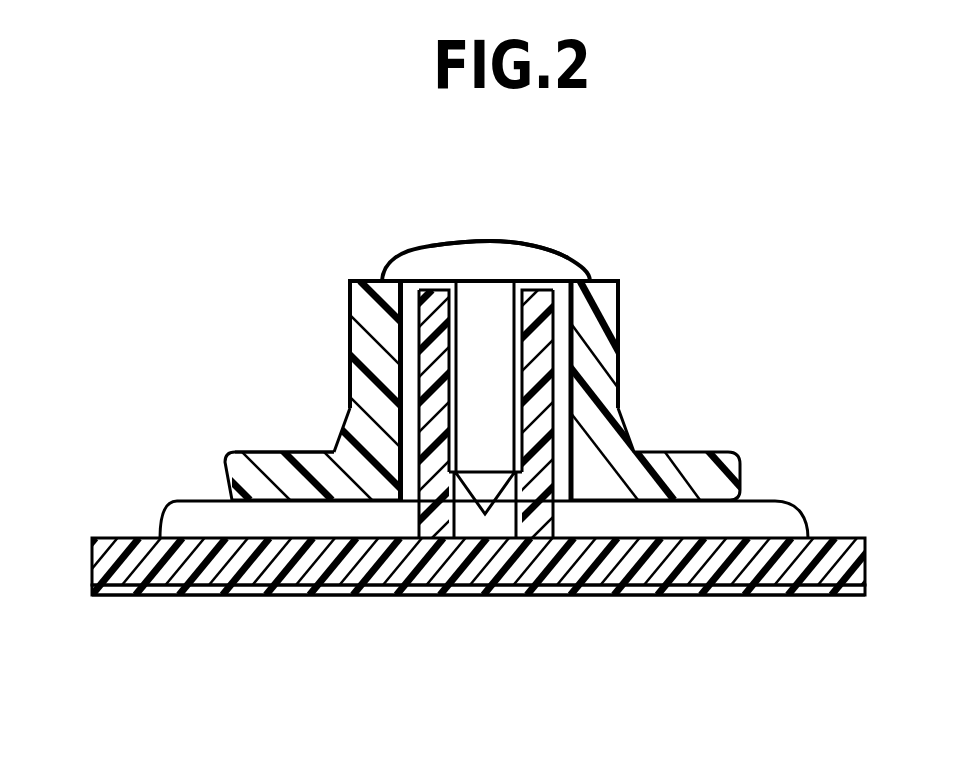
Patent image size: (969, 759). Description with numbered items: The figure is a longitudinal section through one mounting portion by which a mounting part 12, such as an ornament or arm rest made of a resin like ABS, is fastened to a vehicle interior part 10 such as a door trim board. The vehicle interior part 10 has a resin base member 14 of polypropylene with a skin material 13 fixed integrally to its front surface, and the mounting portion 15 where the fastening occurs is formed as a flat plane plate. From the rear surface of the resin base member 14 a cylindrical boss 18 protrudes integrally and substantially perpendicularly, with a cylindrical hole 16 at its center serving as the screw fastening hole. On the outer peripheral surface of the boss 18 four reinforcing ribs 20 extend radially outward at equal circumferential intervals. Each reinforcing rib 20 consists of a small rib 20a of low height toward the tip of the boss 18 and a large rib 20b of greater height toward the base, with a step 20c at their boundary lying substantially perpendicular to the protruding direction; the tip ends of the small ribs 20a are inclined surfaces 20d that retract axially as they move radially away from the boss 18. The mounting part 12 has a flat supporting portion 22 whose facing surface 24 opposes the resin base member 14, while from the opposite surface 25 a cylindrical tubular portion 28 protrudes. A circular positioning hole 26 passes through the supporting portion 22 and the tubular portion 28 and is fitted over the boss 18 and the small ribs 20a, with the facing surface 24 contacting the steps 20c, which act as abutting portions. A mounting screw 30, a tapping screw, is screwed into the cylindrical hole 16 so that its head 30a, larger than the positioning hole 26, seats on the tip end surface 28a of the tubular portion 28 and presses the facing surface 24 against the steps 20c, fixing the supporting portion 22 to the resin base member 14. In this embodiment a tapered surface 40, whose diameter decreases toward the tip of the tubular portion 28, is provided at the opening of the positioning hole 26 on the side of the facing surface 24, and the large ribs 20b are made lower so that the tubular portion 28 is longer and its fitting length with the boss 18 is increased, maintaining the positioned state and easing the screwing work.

The vehicle interior part 10 is at (465, 643).
The mounting part 12 is at (457, 410).
The skin material 13 is at (125, 588).
The resin base member 14 is at (108, 558).
The mounting portion 15 is at (657, 613).
The cylindrical hole 16 is at (458, 528).
The cylindrical boss 18 is at (535, 303).
The reinforcing rib 20 is at (457, 435).
The small rib 20a is at (405, 372).
The large rib 20b is at (205, 515).
The step 20c is at (686, 500).
The inclined surface 20d is at (557, 300).
The supporting portion 22 is at (260, 460).
The facing surface 24 is at (294, 503).
The surface 25 is at (300, 452).
The positioning hole 26 is at (407, 341).
The tubular portion 28 is at (346, 407).
The tip end surface 28a is at (388, 280).
The mounting screw 30 is at (485, 238).
The head 30a is at (458, 262).
The tapered surface 40 is at (579, 488).